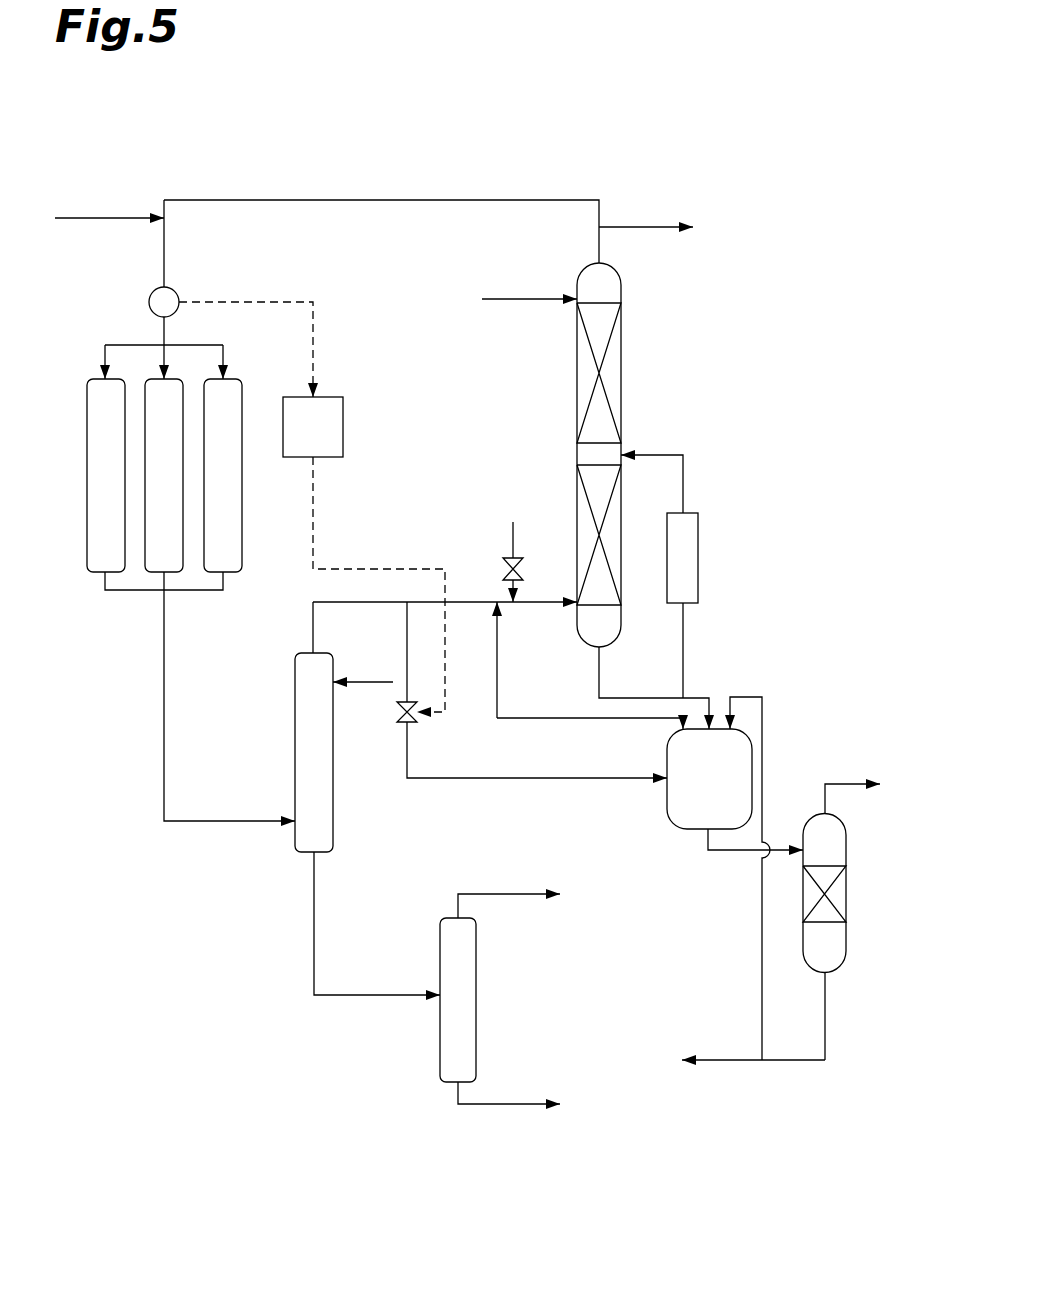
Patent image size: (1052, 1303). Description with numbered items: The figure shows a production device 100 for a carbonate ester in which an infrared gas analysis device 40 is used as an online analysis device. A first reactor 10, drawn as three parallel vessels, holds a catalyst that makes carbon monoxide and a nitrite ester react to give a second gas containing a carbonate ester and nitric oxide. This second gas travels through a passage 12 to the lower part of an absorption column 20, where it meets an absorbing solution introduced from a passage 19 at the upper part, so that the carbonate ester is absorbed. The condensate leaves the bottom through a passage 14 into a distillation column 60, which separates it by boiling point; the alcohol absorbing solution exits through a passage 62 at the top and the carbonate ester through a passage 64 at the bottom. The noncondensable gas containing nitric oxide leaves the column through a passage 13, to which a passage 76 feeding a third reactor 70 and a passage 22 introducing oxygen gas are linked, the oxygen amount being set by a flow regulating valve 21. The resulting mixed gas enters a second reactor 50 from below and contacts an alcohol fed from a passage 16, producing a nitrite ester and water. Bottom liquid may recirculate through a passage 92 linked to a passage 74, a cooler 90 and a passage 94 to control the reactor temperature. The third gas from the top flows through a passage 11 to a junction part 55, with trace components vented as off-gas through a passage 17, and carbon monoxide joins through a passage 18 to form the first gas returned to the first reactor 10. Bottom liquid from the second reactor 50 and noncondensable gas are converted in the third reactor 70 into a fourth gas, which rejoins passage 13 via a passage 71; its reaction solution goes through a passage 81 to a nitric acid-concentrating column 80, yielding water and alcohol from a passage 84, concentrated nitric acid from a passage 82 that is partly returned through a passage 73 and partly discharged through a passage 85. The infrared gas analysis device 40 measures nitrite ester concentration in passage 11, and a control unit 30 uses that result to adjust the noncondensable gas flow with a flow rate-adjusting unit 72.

The production device 100 is at (746, 153).
The first reactor 10 is at (87, 476).
The passage 11 is at (328, 200).
The passage 12 is at (215, 822).
The passage 13 is at (468, 603).
The passage 14 is at (361, 996).
The passage 16 is at (522, 298).
The passage 17 is at (648, 226).
The passage 18 is at (92, 217).
The passage 19 is at (368, 681).
The absorption column 20 is at (295, 748).
The flow regulating valve 21 is at (520, 558).
The passage 22 is at (511, 541).
The control unit 30 is at (320, 396).
The infrared gas analysis device 40 is at (149, 303).
The second reactor 50 is at (577, 470).
The junction part 55 is at (168, 218).
The distillation column 60 is at (440, 937).
The passage 62 is at (520, 893).
The passage 64 is at (522, 1103).
The third reactor 70 is at (682, 829).
The passage 71 is at (545, 718).
The flow rate-adjusting unit 72 is at (398, 724).
The passage 73 is at (761, 1000).
The passage 74 is at (600, 676).
The passage 76 is at (410, 748).
The nitric acid-concentrating column 80 is at (847, 840).
The passage 81 is at (725, 851).
The passage 82 is at (826, 1008).
The passage 84 is at (855, 783).
The passage 85 is at (721, 1061).
The cooler 90 is at (699, 548).
The passage 92 is at (684, 632).
The passage 94 is at (684, 480).